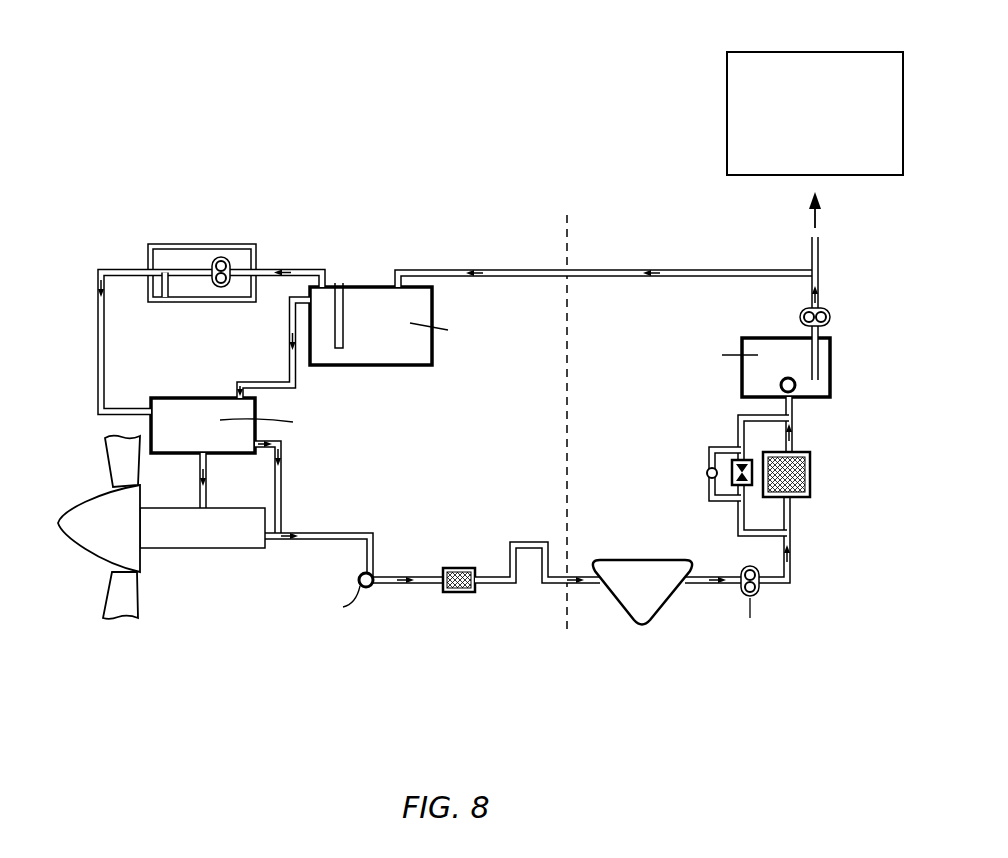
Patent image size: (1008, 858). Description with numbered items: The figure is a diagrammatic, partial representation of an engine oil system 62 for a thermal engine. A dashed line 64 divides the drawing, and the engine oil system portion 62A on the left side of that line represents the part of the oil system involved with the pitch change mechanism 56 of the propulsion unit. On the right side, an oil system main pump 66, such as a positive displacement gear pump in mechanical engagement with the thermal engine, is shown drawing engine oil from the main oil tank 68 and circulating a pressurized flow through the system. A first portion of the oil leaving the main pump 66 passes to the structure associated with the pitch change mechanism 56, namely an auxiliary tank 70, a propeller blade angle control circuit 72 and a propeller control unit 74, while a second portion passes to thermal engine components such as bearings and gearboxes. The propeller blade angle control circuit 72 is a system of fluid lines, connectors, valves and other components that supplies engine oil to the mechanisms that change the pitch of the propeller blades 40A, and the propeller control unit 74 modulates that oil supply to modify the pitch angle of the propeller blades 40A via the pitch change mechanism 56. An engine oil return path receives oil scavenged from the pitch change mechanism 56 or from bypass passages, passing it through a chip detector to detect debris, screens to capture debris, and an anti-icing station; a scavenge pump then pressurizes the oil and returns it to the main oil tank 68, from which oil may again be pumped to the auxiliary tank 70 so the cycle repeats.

The engine oil system 62 is at (552, 76).
The engine oil system portion 62A is at (373, 135).
The dashed line 64 is at (572, 239).
The oil system main pump 66 is at (805, 312).
The main oil tank 68 is at (742, 393).
The auxiliary tank 70 is at (388, 366).
The propeller blade angle control circuit 72 is at (114, 234).
The propeller control unit 74 is at (201, 397).
The propeller blades 40A is at (107, 443).
The pitch change mechanism 56 is at (100, 541).